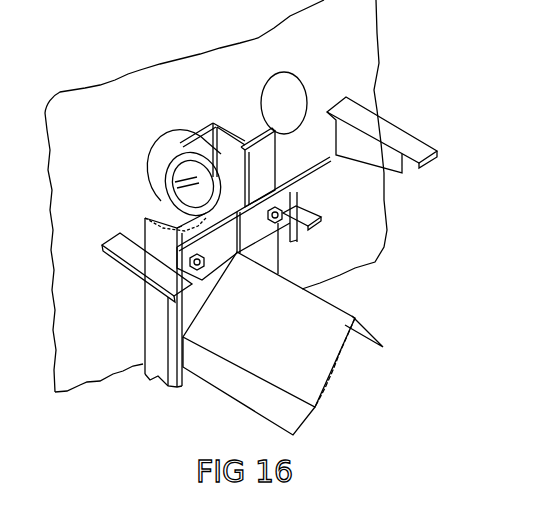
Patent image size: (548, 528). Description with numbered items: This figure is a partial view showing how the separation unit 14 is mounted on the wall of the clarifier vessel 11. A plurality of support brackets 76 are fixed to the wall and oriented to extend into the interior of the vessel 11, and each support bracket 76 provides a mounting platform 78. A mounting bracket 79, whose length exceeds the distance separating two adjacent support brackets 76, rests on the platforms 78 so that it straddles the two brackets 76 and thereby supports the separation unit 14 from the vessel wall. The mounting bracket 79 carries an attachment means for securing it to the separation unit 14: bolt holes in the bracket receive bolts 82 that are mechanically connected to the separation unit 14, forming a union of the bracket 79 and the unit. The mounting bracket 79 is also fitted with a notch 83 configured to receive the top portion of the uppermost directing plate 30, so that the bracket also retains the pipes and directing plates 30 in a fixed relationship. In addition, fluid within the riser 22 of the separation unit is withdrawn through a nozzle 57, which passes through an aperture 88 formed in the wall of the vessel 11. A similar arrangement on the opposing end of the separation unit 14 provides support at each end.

The vessel 11 is at (217, 92).
The separation unit 14 is at (320, 315).
The riser 22 is at (150, 238).
The directing plate 30 is at (290, 346).
The nozzle 57 is at (160, 172).
The support bracket 76 is at (123, 276).
The mounting platform 78 is at (118, 245).
The mounting bracket 79 is at (276, 161).
The bolt 82 is at (199, 256).
The notch 83 is at (240, 257).
The aperture 88 is at (300, 116).